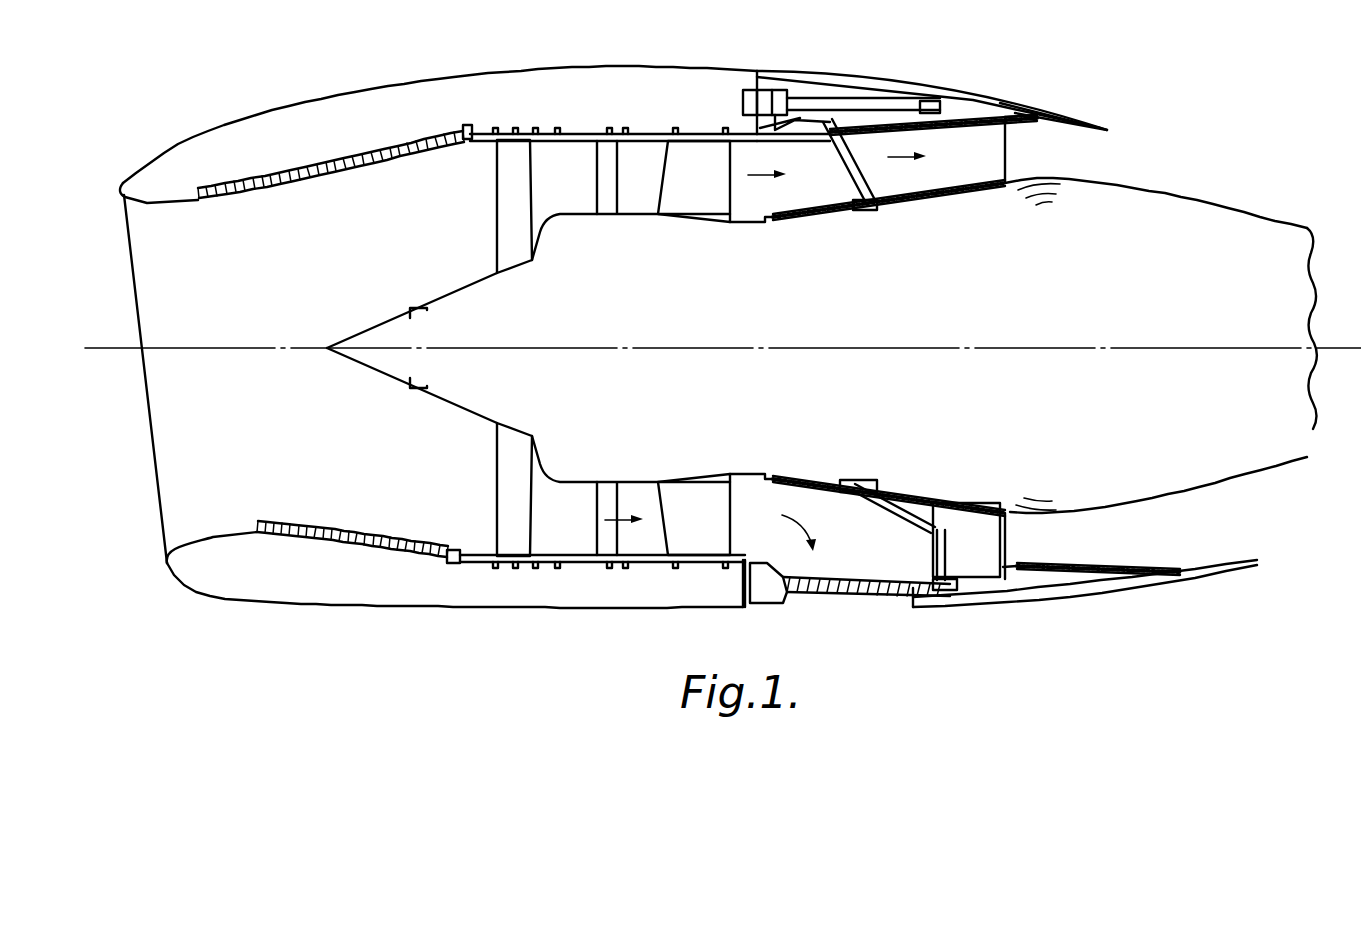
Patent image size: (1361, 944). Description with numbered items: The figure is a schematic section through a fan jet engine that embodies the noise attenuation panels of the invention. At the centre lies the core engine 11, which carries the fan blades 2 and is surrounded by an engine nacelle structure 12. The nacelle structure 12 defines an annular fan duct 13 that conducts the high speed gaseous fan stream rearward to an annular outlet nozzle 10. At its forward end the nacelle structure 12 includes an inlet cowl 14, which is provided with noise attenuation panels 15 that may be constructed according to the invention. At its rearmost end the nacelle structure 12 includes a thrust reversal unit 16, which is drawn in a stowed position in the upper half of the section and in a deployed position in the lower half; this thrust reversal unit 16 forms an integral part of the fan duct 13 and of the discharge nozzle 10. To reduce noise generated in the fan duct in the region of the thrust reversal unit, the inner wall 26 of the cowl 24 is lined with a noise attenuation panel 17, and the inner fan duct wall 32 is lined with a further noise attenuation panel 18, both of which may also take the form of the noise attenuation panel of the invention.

The annular outlet nozzle 10 is at (1120, 153).
The core engine 11 is at (603, 326).
The engine nacelle structure 12 is at (523, 52).
The annular fan duct 13 is at (640, 158).
The inlet cowl 14 is at (261, 130).
The noise attenuation panels 15 is at (283, 187).
The thrust reversal unit 16 is at (894, 58).
The noise attenuation panel 17 is at (957, 128).
The noise attenuation panel 18 is at (978, 190).
The fan blades 2 is at (500, 235).
The cowl 24 is at (1025, 95).
The inner wall 26 is at (1025, 130).
The inner fan duct wall 32 is at (802, 205).